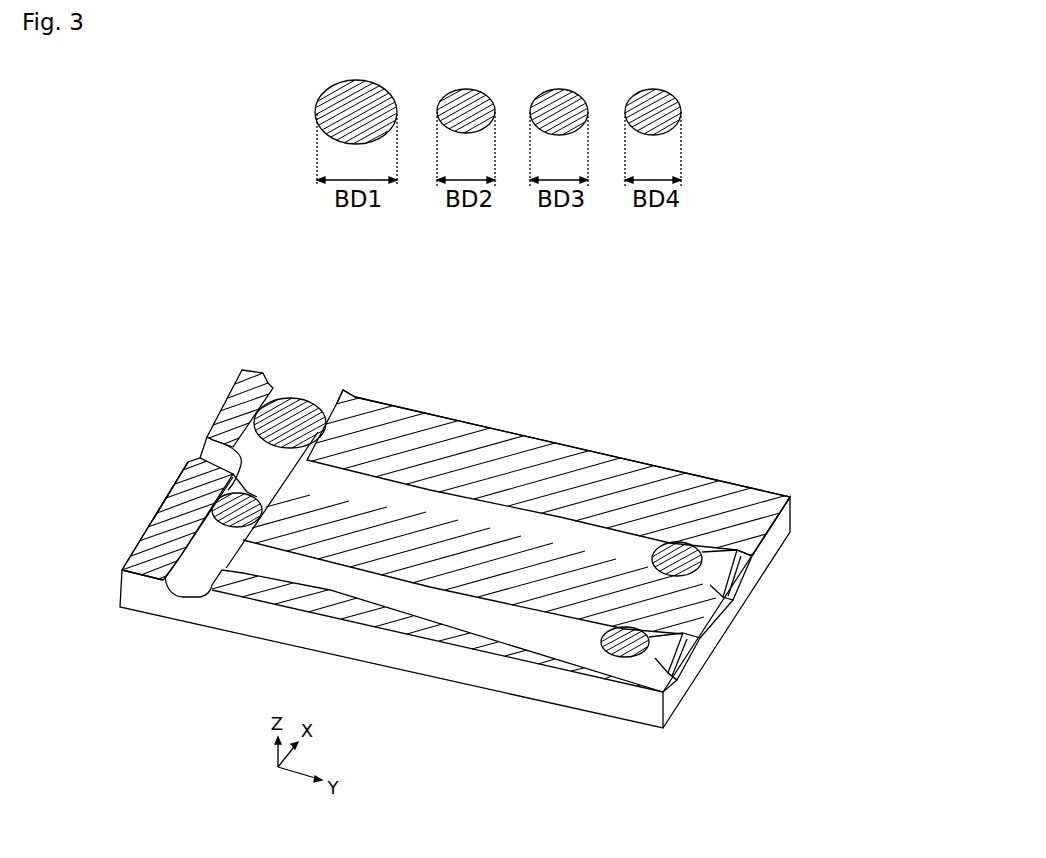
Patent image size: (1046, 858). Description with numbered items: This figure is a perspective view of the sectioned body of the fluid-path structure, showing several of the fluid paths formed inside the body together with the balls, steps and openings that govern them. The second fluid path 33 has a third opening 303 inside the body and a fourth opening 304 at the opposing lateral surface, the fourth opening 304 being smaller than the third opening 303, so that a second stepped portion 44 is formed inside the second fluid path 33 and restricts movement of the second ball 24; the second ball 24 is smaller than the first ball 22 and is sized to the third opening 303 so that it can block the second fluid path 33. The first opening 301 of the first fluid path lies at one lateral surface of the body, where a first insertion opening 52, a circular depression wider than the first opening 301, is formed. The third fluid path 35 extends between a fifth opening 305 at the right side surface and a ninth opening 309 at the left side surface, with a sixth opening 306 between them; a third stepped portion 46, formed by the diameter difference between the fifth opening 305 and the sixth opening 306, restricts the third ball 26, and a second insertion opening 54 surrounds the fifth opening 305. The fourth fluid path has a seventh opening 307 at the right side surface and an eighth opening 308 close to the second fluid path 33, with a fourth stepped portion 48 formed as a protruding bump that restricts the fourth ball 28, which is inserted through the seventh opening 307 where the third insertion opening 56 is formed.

The first ball 22 is at (223, 403).
The second ball 24 is at (182, 487).
The third ball 26 is at (708, 558).
The fourth ball 28 is at (615, 657).
The second fluid path 33 is at (497, 520).
The third fluid path 35 is at (460, 608).
The second stepped portion 44 is at (157, 507).
The third stepped portion 46 is at (680, 542).
The fourth stepped portion 48 is at (590, 640).
The first insertion opening 52 is at (348, 392).
The second insertion opening 54 is at (790, 552).
The third insertion opening 56 is at (705, 678).
The first opening 301 is at (285, 396).
The third opening 303 is at (203, 435).
The fourth opening 304 is at (192, 592).
The fifth opening 305 is at (752, 560).
The sixth opening 306 is at (405, 445).
The seventh opening 307 is at (703, 640).
The eighth opening 308 is at (228, 587).
The ninth opening 309 is at (197, 455).